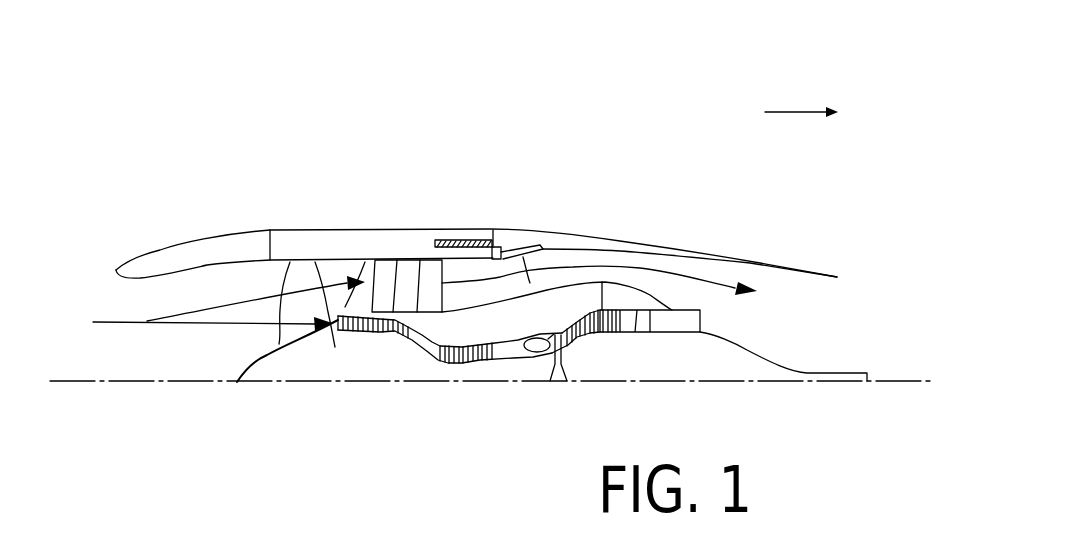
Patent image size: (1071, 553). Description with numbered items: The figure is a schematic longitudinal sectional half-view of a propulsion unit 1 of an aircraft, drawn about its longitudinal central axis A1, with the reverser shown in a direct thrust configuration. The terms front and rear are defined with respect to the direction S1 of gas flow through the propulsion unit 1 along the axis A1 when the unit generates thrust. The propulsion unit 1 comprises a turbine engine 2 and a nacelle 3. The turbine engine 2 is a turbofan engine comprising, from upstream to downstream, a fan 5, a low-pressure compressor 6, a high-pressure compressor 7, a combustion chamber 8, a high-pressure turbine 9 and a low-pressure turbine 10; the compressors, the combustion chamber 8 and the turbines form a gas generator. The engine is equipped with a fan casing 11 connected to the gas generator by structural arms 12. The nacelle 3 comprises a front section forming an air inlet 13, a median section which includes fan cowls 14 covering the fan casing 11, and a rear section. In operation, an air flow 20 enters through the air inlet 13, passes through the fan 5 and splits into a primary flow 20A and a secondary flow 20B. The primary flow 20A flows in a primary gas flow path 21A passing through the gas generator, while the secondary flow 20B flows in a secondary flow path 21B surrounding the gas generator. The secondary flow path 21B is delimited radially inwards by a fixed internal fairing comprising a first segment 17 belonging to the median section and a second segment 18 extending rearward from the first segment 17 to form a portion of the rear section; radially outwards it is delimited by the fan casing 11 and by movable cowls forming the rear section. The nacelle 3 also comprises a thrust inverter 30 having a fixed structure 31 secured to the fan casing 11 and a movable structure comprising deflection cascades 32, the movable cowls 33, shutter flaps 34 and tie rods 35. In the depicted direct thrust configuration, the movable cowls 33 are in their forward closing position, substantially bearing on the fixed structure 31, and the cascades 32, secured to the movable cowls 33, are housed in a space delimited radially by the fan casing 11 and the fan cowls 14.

The propulsion unit 1 is at (120, 158).
The turbine engine 2 is at (811, 336).
The nacelle 3 is at (568, 65).
The fan 5 is at (273, 337).
The low-pressure compressor 6 is at (372, 338).
The high-pressure compressor 7 is at (457, 372).
The combustion chamber 8 is at (530, 375).
The high-pressure turbine 9 is at (591, 349).
The low-pressure turbine 10 is at (645, 345).
The fan casing 11 is at (315, 262).
The structural arms 12 is at (433, 287).
The air inlet 13 is at (176, 246).
The fan cowls 14 is at (375, 258).
The first segment 17 is at (365, 262).
The second segment 18 is at (665, 300).
The air flow 20 is at (146, 321).
The primary flow 20A is at (247, 330).
The secondary flow 20B is at (297, 262).
The primary gas flow path 21A is at (530, 282).
The secondary flow path 21B is at (620, 252).
The thrust inverter 30 is at (483, 185).
The fixed structure 31 is at (500, 247).
The deflection cascades 32 is at (447, 240).
The movable cowls 33 is at (541, 252).
The shutter flaps 34 is at (546, 255).
The tie rods 35 is at (513, 350).
The longitudinal central axis A1 is at (67, 383).
The direction of gas flow S1 is at (800, 110).